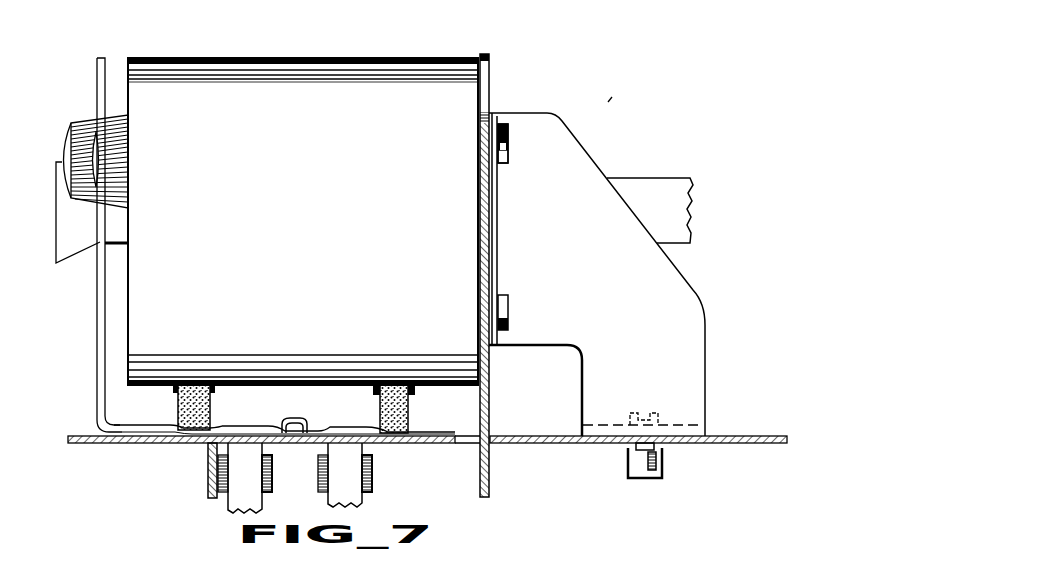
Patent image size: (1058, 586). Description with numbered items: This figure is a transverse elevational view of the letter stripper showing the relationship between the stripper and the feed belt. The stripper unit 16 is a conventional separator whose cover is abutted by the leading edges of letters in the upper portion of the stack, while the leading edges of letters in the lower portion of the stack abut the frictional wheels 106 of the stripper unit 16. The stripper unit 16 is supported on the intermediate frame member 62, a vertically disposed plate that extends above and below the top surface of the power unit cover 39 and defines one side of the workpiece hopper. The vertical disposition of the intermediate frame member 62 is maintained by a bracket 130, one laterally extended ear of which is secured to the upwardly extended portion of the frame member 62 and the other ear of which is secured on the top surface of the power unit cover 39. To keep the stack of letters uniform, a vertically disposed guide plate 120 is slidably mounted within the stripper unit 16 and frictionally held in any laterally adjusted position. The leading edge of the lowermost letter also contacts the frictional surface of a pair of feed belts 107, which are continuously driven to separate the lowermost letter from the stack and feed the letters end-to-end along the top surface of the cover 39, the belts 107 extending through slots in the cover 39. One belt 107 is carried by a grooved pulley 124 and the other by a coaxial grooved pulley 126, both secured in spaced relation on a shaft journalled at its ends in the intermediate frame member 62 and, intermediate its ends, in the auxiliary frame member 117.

The stripper unit 16 is at (296, 204).
The power unit cover 39 is at (102, 443).
The intermediate frame member 62 is at (486, 412).
The frictional wheels 106 is at (210, 411).
The feed belts 107 is at (338, 489).
The auxiliary frame member 117 is at (207, 485).
The guide plate 120 is at (99, 327).
The grooved pulley 124 is at (272, 479).
The grooved pulley 126 is at (373, 477).
The bracket 130 is at (687, 290).